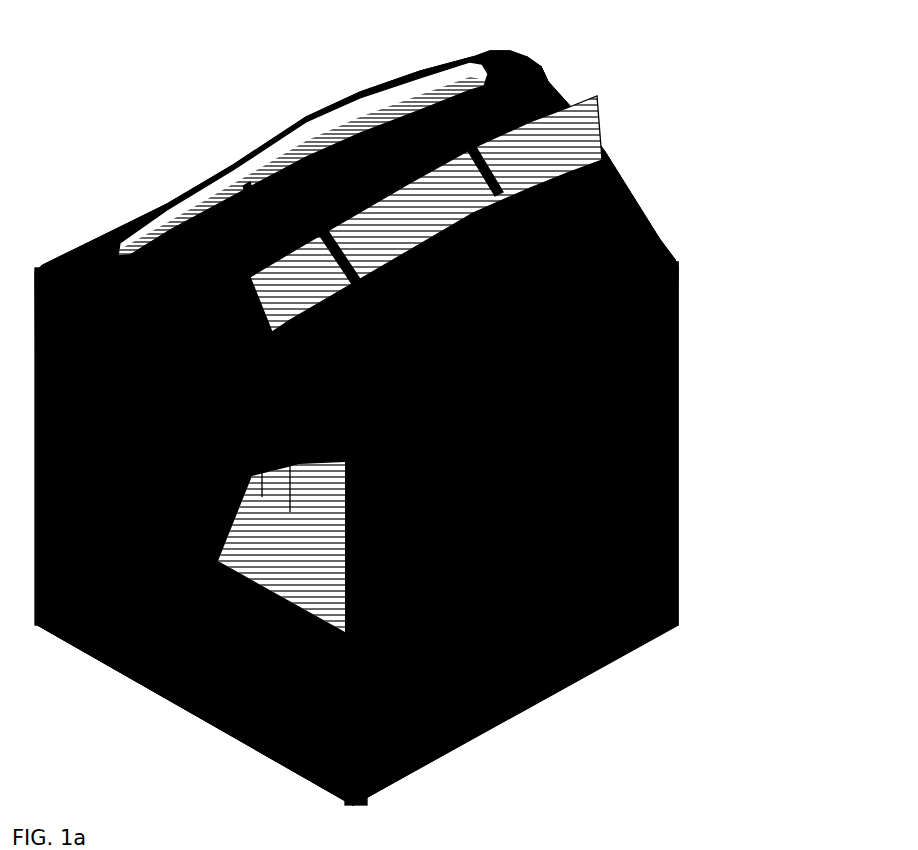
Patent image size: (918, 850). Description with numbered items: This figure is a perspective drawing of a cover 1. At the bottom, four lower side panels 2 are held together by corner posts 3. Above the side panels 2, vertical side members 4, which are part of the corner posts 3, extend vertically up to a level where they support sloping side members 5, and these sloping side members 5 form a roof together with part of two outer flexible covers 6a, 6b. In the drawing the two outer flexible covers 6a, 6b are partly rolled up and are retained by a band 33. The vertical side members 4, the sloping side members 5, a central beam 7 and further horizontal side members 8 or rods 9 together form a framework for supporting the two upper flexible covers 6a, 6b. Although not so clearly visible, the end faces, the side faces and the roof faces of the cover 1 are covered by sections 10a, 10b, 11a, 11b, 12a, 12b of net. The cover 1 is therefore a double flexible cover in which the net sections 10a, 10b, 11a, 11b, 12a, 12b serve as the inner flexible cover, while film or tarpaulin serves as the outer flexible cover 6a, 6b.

The cover 1 is at (252, 97).
The lower side panel 2 is at (673, 555).
The corner post 3 is at (679, 588).
The vertical side member 4 is at (679, 370).
The sloping side member 5 is at (660, 243).
The outer flexible cover 6a is at (338, 122).
The outer flexible cover 6b is at (567, 158).
The central beam 7 is at (527, 72).
The horizontal side member 8 is at (673, 508).
The rod 9 is at (678, 323).
The net section 10a is at (33, 440).
The net section 10b is at (678, 428).
The net section 11a is at (92, 357).
The net section 11b is at (678, 395).
The net section 12a is at (97, 240).
The net section 12b is at (633, 218).
The band 33 is at (497, 166).